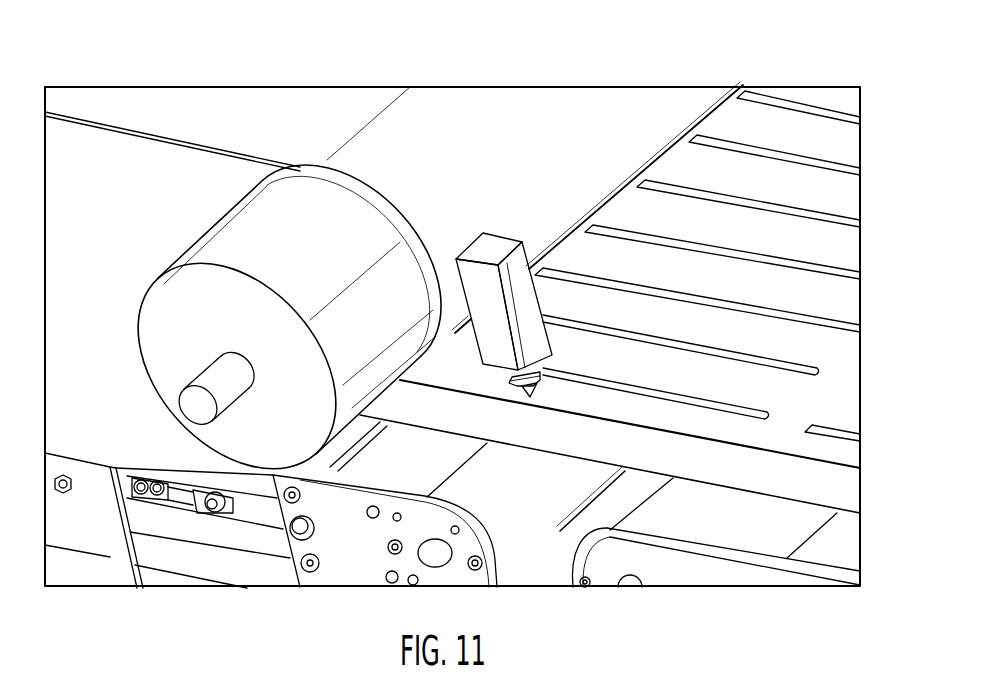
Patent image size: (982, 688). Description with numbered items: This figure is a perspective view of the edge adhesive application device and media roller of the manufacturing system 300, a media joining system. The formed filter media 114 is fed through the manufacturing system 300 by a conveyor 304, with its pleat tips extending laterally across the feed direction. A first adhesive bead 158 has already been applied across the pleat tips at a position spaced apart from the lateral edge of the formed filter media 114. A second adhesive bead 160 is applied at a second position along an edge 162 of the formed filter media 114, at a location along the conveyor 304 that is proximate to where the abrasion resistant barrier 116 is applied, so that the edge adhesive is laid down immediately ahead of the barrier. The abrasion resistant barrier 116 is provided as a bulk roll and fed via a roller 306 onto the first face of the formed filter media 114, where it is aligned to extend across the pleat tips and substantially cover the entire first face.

The manufacturing system 300 is at (88, 65).
The abrasion resistant barrier 116 is at (288, 112).
The first adhesive bead 158 is at (830, 113).
The roller 306 is at (175, 303).
The second adhesive bead 160 is at (480, 393).
The edge 162 is at (837, 465).
The formed filter media 114 is at (837, 498).
The conveyor 304 is at (107, 580).